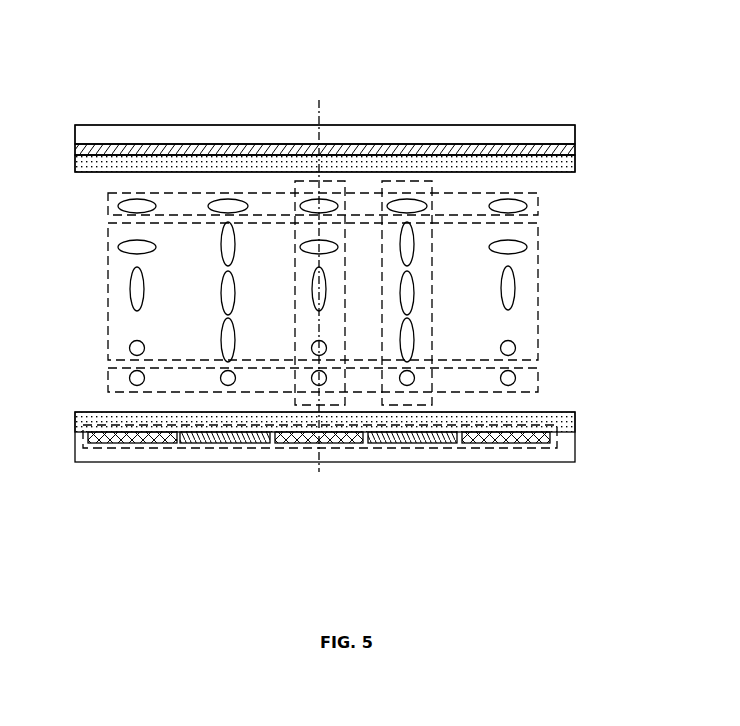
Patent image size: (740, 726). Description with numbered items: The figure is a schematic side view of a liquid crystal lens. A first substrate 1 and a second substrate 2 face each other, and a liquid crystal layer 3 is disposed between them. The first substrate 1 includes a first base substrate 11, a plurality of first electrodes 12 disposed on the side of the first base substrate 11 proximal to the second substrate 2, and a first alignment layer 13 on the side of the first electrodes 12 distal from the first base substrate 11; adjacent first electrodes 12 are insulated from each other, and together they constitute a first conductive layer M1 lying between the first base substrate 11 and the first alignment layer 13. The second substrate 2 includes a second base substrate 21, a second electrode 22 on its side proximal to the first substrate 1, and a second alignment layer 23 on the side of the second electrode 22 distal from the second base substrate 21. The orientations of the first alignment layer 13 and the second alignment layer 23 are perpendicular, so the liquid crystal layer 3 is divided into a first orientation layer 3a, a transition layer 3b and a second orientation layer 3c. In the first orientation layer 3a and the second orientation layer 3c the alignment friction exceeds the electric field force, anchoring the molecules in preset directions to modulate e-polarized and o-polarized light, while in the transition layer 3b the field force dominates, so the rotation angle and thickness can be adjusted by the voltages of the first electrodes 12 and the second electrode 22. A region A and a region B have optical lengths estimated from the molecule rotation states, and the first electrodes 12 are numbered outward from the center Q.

The first substrate 1 is at (325, 503).
The first base substrate 11 is at (395, 453).
The first electrodes 12 is at (395, 570).
The first alignment layer 13 is at (508, 418).
The first conductive layer M1 is at (144, 443).
The second substrate 2 is at (325, 95).
The second base substrate 21 is at (195, 135).
The second electrode 22 is at (125, 153).
The second alignment layer 23 is at (257, 171).
The liquid crystal layer 3 is at (515, 287).
The first orientation layer 3a is at (108, 205).
The transition layer 3b is at (347, 292).
The second orientation layer 3c is at (108, 378).
The region A is at (330, 180).
The region B is at (405, 180).
The center Q is at (328, 287).